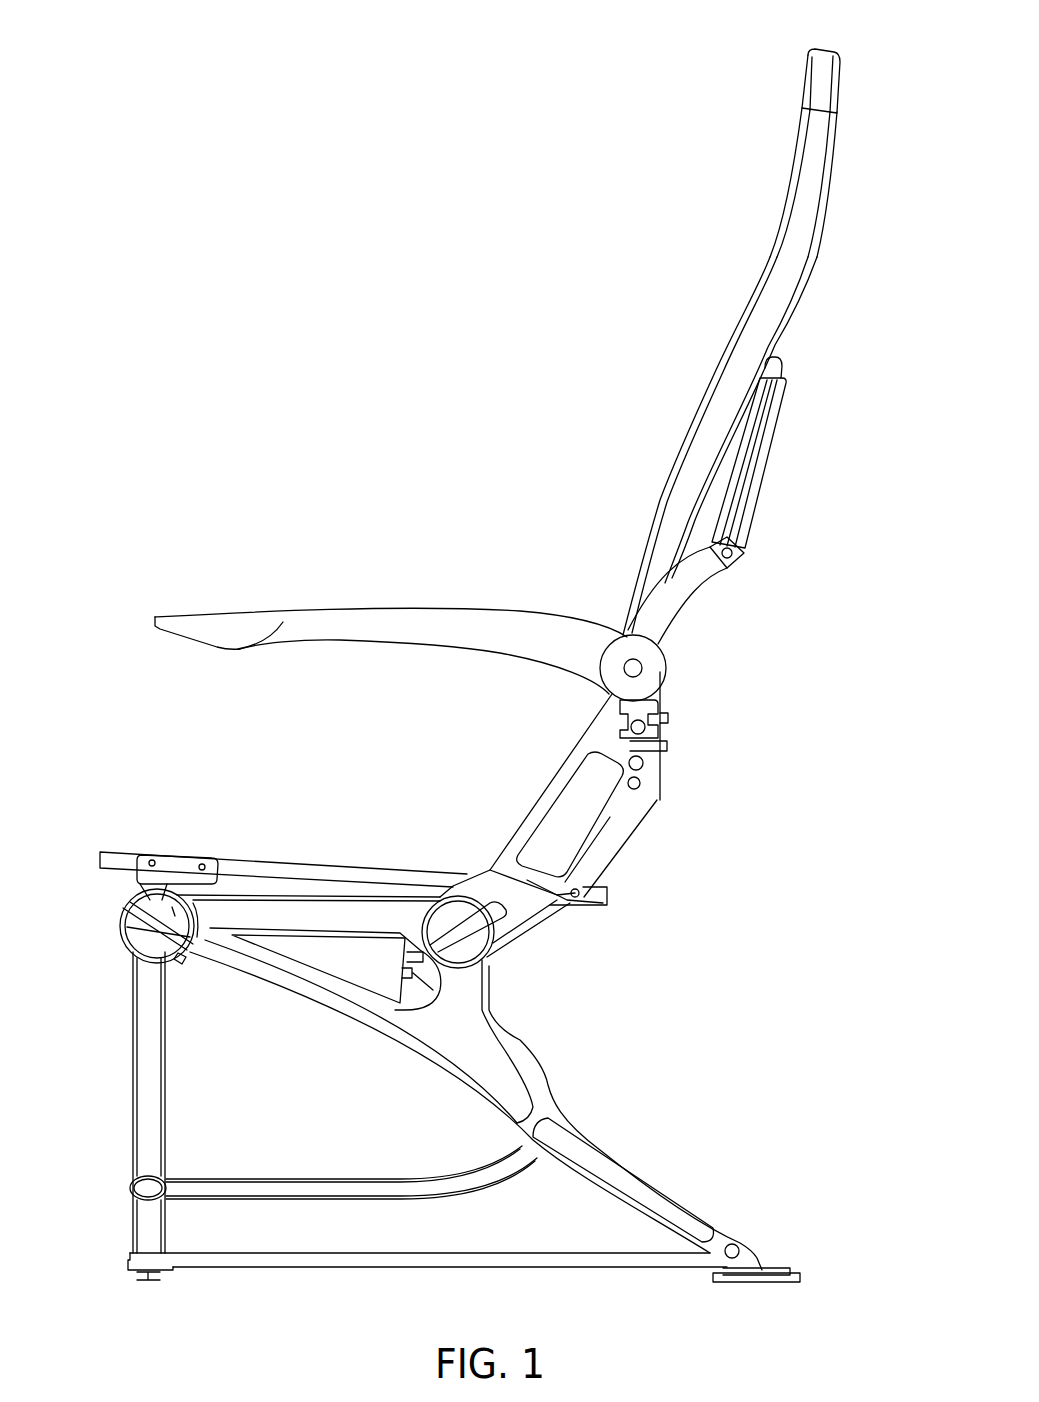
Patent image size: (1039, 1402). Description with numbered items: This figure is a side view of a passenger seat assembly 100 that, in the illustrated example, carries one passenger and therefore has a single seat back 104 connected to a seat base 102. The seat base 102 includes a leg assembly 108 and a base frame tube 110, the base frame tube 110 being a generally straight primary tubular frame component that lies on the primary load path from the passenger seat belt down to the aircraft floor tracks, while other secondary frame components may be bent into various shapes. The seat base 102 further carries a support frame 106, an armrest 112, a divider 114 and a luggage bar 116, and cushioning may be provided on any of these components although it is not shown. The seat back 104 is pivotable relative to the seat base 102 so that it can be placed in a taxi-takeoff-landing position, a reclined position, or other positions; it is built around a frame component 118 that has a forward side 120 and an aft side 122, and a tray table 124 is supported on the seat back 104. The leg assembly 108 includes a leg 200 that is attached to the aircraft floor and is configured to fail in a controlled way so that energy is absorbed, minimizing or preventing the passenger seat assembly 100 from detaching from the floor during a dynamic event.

The passenger seat assembly 100 is at (882, 76).
The seat base 102 is at (129, 851).
The seat back 104 is at (763, 276).
The support frame 106 is at (347, 868).
The leg assembly 108 is at (150, 1005).
The base frame tube 110 is at (120, 927).
The armrest 112 is at (385, 622).
The divider 114 is at (594, 754).
The luggage bar 116 is at (304, 1187).
The frame component 118 is at (805, 171).
The forward side 120 is at (726, 358).
The aft side 122 is at (829, 180).
The tray table 124 is at (758, 474).
The leg 200 is at (708, 1115).